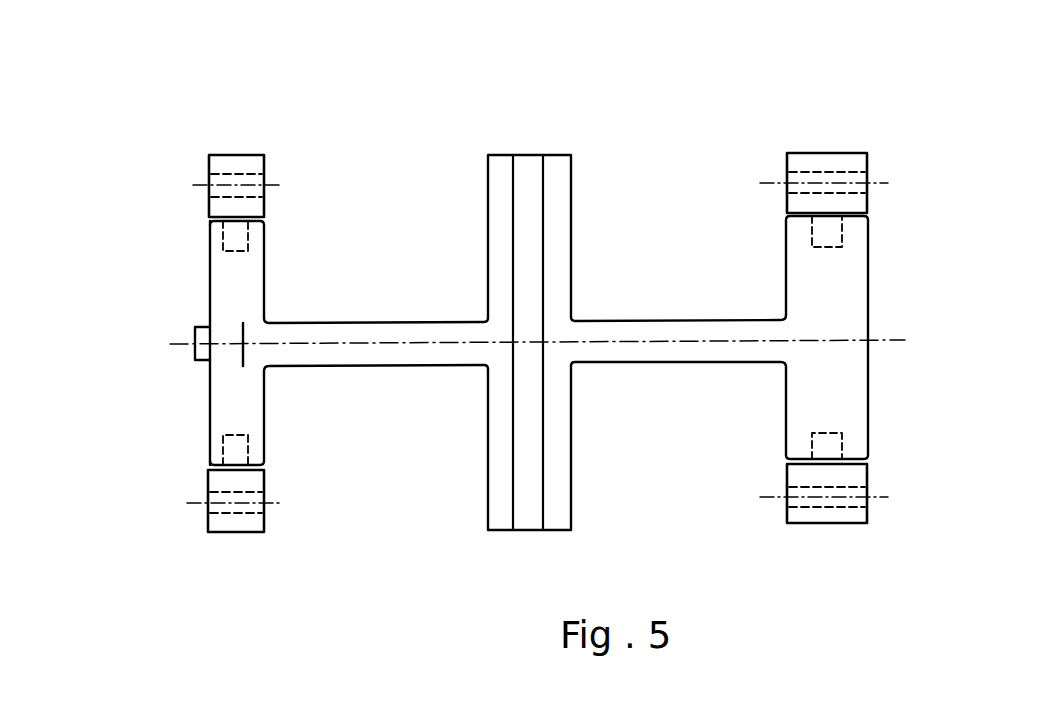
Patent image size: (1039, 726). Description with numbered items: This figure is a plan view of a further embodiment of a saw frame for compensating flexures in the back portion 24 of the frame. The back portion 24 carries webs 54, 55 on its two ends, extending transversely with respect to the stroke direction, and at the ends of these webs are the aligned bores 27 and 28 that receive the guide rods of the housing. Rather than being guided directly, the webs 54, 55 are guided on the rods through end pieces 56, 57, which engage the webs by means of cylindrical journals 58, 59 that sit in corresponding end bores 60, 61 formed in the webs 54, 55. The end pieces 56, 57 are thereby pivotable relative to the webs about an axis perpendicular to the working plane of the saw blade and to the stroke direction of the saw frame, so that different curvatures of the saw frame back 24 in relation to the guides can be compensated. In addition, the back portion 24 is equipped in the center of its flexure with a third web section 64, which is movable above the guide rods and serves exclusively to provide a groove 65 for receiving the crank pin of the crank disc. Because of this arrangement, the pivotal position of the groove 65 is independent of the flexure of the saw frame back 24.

The back portion of the saw frame 24 is at (688, 332).
The bore 27 is at (258, 164).
The bore 28 is at (803, 188).
The web 54 is at (240, 276).
The web 55 is at (837, 308).
The end piece 56 is at (228, 193).
The end piece 57 is at (830, 162).
The cylindrical journal 58 is at (232, 232).
The cylindrical journal 59 is at (828, 228).
The end bore 60 is at (232, 240).
The end bore 61 is at (837, 250).
The third web section 64 is at (505, 183).
The groove 65 is at (532, 243).